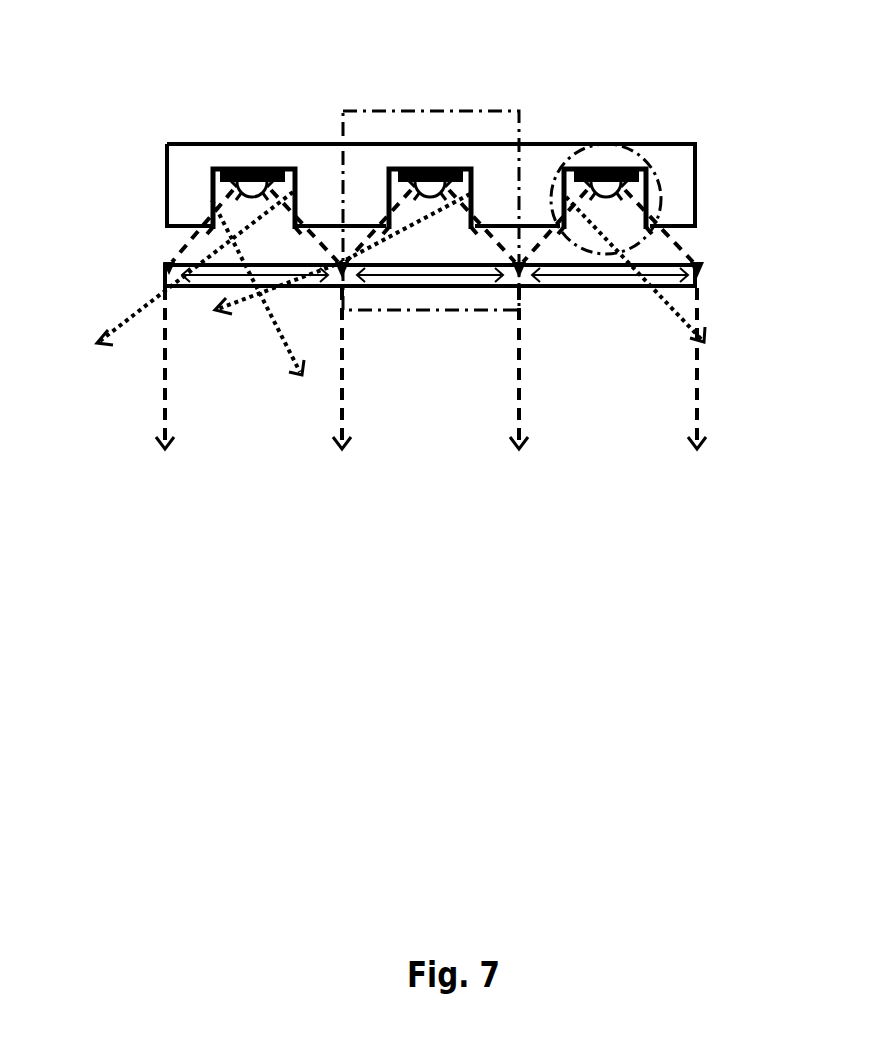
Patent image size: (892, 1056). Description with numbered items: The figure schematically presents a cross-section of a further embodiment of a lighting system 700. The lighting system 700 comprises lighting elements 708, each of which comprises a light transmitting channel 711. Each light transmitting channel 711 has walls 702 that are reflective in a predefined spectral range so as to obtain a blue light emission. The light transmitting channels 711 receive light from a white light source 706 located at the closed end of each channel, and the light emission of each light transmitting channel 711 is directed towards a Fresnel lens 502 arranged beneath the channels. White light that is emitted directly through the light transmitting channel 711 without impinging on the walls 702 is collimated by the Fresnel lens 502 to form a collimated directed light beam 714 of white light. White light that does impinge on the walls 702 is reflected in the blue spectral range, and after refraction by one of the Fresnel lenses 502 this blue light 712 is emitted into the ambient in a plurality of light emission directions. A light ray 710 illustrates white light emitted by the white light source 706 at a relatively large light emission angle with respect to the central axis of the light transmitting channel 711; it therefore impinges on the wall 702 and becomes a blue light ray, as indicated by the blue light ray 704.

The lighting system 700 is at (720, 157).
The walls 702 is at (211, 178).
The blue light ray 704 is at (217, 228).
The white light source 706 is at (266, 168).
The lighting element 708 is at (420, 113).
The light ray 710 is at (566, 172).
The light transmitting channel 711 is at (642, 167).
The blue light 712 is at (293, 359).
The collimated directed light beam 714 is at (342, 405).
The Fresnel lens 502 is at (693, 283).